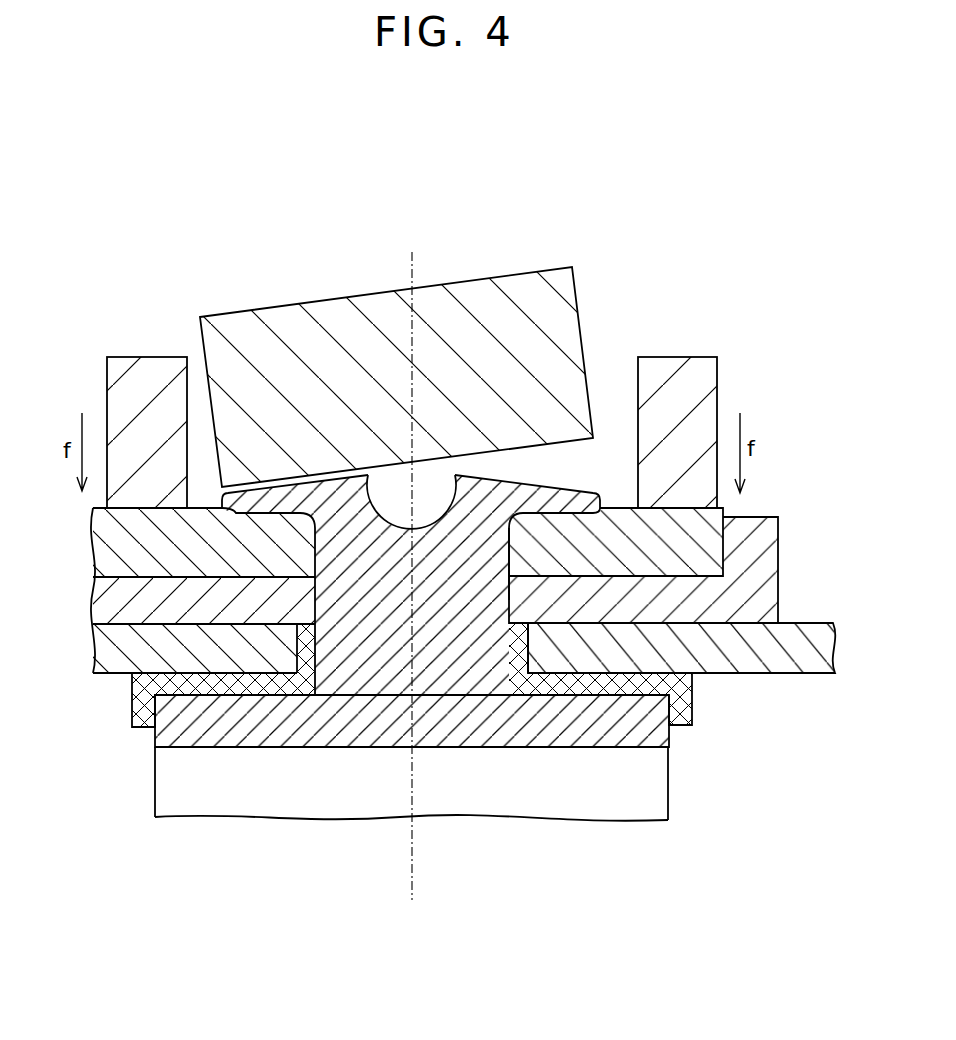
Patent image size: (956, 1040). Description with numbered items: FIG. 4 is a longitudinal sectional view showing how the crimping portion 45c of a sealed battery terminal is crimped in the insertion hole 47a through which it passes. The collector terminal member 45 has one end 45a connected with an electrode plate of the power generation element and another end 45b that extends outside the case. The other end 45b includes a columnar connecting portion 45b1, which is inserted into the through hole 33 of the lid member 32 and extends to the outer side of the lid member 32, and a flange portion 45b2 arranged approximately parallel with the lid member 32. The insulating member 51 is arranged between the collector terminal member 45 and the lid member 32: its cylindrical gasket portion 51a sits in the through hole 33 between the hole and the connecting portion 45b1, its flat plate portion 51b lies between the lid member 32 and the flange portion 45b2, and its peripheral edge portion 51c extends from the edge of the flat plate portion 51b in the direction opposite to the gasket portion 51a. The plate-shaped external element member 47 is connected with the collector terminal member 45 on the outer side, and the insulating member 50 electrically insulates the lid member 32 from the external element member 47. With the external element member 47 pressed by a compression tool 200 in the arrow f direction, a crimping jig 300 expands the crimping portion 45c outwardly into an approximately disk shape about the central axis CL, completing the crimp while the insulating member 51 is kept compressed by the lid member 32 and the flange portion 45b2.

The lid member 32 is at (805, 643).
The through hole 33 is at (527, 647).
The collector terminal member 45 is at (442, 826).
The one end of collector terminal member 45a is at (640, 810).
The other end of collector terminal member 45b is at (432, 560).
The connecting portion 45b1 is at (537, 502).
The flange portion 45b2 is at (633, 731).
The crimping portion 45c is at (271, 505).
The external element member 47 is at (133, 547).
The insertion hole 47a is at (508, 557).
The insulating member 50 is at (753, 551).
The insulating member 51 is at (421, 748).
The gasket portion 51a is at (305, 650).
The flat plate portion 51b is at (605, 683).
The peripheral edge portion 51c is at (690, 708).
The compression tool 200 is at (145, 383).
The crimping jig 300 is at (345, 327).
The central axis CL is at (413, 272).